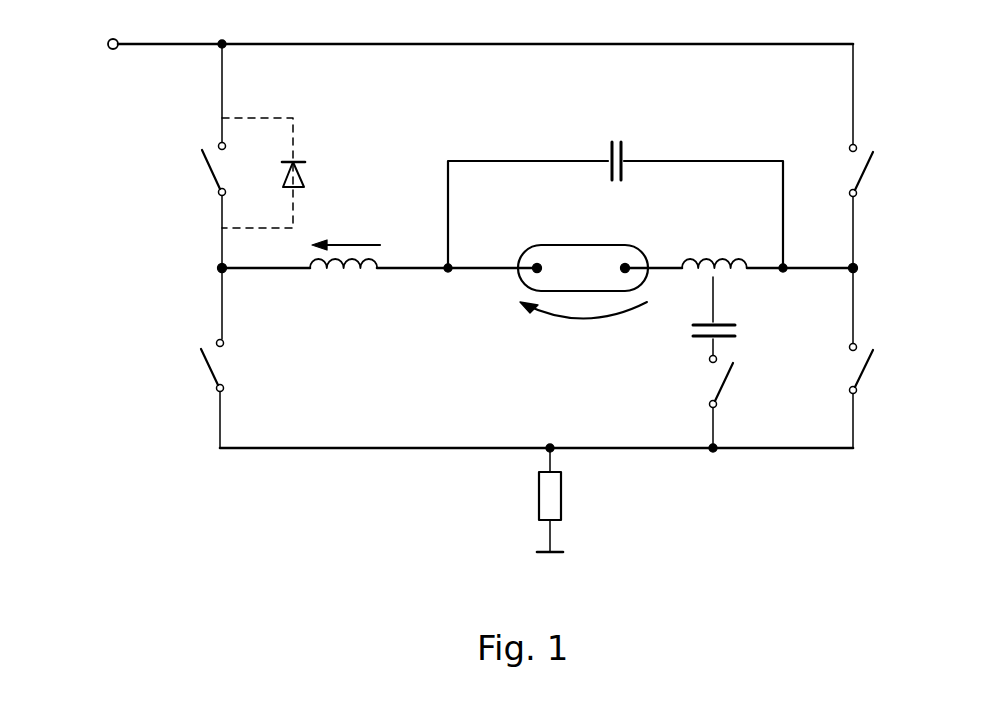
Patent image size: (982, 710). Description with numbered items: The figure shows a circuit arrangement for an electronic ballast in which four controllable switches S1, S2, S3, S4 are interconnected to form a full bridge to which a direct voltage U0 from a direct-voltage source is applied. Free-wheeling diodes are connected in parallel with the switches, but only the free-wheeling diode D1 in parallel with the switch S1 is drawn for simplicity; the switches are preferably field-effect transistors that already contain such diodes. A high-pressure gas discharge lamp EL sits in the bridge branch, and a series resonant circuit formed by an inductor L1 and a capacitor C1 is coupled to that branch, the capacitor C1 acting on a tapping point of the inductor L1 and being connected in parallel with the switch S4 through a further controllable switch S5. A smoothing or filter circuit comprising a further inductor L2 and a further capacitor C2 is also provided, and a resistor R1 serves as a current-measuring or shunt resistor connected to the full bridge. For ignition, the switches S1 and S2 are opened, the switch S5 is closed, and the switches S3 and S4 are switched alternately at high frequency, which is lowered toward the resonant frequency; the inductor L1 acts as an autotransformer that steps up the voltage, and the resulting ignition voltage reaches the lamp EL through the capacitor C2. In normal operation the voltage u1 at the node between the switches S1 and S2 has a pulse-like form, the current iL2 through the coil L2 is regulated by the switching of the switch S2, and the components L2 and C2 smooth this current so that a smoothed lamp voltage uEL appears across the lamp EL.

The direct voltage U0 is at (107, 44).
The controllable switch S1 is at (205, 170).
The free-wheeling diode D1 is at (306, 176).
The controllable switch S2 is at (205, 365).
The voltage at nodal point u1 is at (225, 272).
The further inductor L2 is at (343, 277).
The current through coil L2 iL2 is at (346, 229).
The further capacitor C2 is at (613, 140).
The gas discharge lamp EL is at (590, 244).
The lamp voltage uEL is at (583, 330).
The inductor L1 is at (713, 262).
The capacitor C1 is at (737, 331).
The further controllable switch S5 is at (723, 382).
The controllable switch S3 is at (862, 178).
The controllable switch S4 is at (862, 372).
The resistor R1 is at (562, 490).